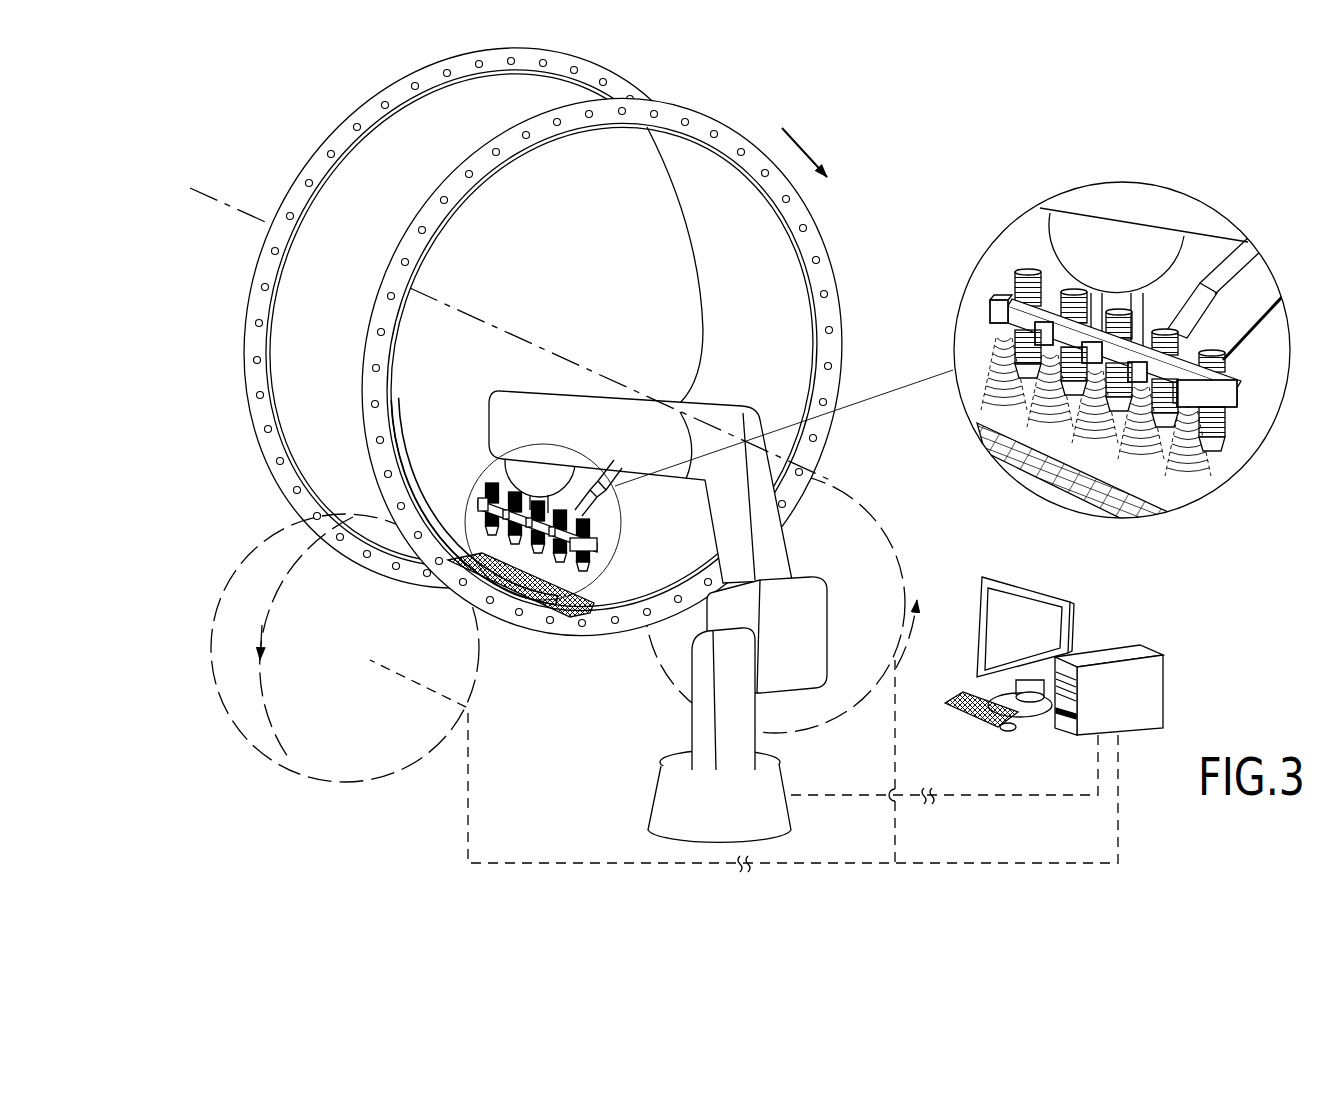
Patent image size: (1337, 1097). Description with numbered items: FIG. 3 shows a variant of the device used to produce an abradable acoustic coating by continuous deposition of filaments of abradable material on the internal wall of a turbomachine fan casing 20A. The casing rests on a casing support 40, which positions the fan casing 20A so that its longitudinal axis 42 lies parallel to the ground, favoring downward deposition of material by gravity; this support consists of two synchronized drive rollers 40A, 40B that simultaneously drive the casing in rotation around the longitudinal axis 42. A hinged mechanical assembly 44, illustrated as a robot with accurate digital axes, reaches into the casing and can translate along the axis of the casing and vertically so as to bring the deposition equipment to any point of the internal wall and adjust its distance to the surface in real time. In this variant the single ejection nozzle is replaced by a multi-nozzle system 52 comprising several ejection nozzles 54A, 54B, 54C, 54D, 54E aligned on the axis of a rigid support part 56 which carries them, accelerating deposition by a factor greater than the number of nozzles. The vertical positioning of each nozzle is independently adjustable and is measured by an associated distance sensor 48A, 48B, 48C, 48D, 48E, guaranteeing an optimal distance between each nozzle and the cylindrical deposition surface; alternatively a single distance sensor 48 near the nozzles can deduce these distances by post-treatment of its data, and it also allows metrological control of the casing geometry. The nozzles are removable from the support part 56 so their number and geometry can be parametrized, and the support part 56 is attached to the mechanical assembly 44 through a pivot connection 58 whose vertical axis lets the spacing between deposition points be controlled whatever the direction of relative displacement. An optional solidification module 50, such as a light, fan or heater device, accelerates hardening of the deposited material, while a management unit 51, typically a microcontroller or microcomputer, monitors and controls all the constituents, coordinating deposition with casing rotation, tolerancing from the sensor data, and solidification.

The fan casing 20A is at (340, 323).
The casing support 40 is at (198, 742).
The synchronized drive roller 40A is at (395, 757).
The synchronized drive roller 40B is at (893, 548).
The longitudinal axis 42 is at (505, 328).
The mechanical assembly 44 is at (612, 412).
The distance sensor 48 is at (477, 502).
The distance sensor 48A is at (990, 312).
The distance sensor 48B is at (1005, 303).
The distance sensor 48C is at (1085, 368).
The distance sensor 48D is at (1137, 392).
The distance sensor 48E is at (1240, 395).
The solidification module 50 is at (604, 496).
The management unit 51 is at (1122, 630).
The multi-nozzle system 52 is at (608, 547).
The ejection nozzle 54A is at (490, 533).
The ejection nozzle 54B is at (1060, 392).
The ejection nozzle 54C is at (1112, 440).
The ejection nozzle 54D is at (1167, 432).
The ejection nozzle 54E is at (592, 557).
The rigid support part 56 is at (1048, 305).
The pivot connection 58 is at (545, 470).